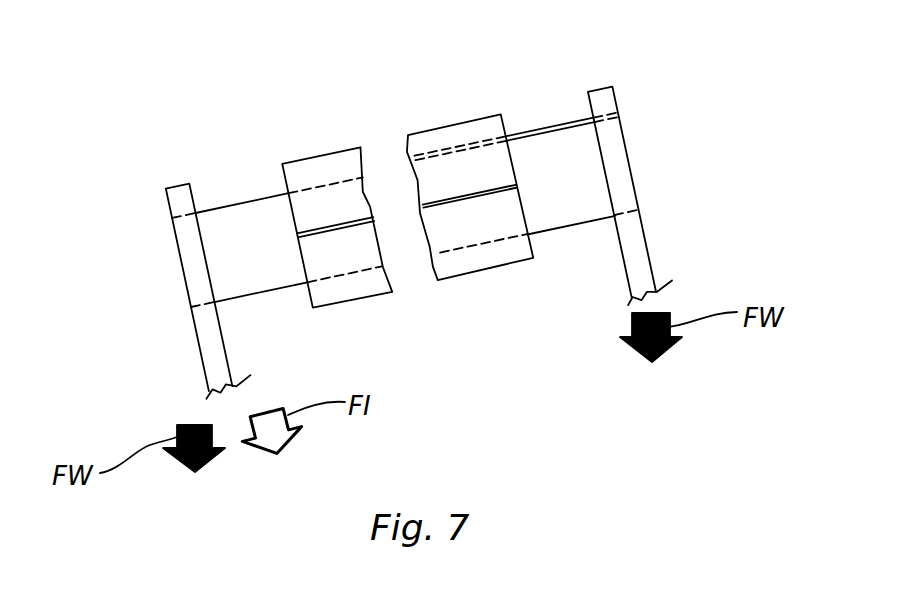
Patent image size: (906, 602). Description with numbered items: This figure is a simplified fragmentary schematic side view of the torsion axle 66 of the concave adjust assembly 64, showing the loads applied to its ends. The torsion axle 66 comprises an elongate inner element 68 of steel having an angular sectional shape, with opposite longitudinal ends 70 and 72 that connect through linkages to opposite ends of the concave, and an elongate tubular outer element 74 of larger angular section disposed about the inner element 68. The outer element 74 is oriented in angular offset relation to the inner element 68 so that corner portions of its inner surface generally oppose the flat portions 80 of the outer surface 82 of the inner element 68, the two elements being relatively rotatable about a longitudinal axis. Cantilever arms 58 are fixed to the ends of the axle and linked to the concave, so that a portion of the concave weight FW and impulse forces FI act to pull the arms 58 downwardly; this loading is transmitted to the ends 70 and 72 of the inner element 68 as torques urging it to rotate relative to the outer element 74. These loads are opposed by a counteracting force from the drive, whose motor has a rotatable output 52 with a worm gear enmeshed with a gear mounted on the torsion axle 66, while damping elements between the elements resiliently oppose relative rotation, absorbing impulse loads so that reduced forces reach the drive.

The rotatable output 52 is at (649, 247).
The cantilever arms 58 is at (205, 360).
The concave adjust assembly 64 is at (665, 156).
The torsion axle 66 is at (468, 187).
The inner element 68 is at (217, 198).
The longitudinal end 70 is at (268, 196).
The longitudinal end 72 is at (547, 127).
The outer element 74 is at (488, 270).
The flat portions 80 is at (644, 129).
The outer surface 82 is at (644, 129).